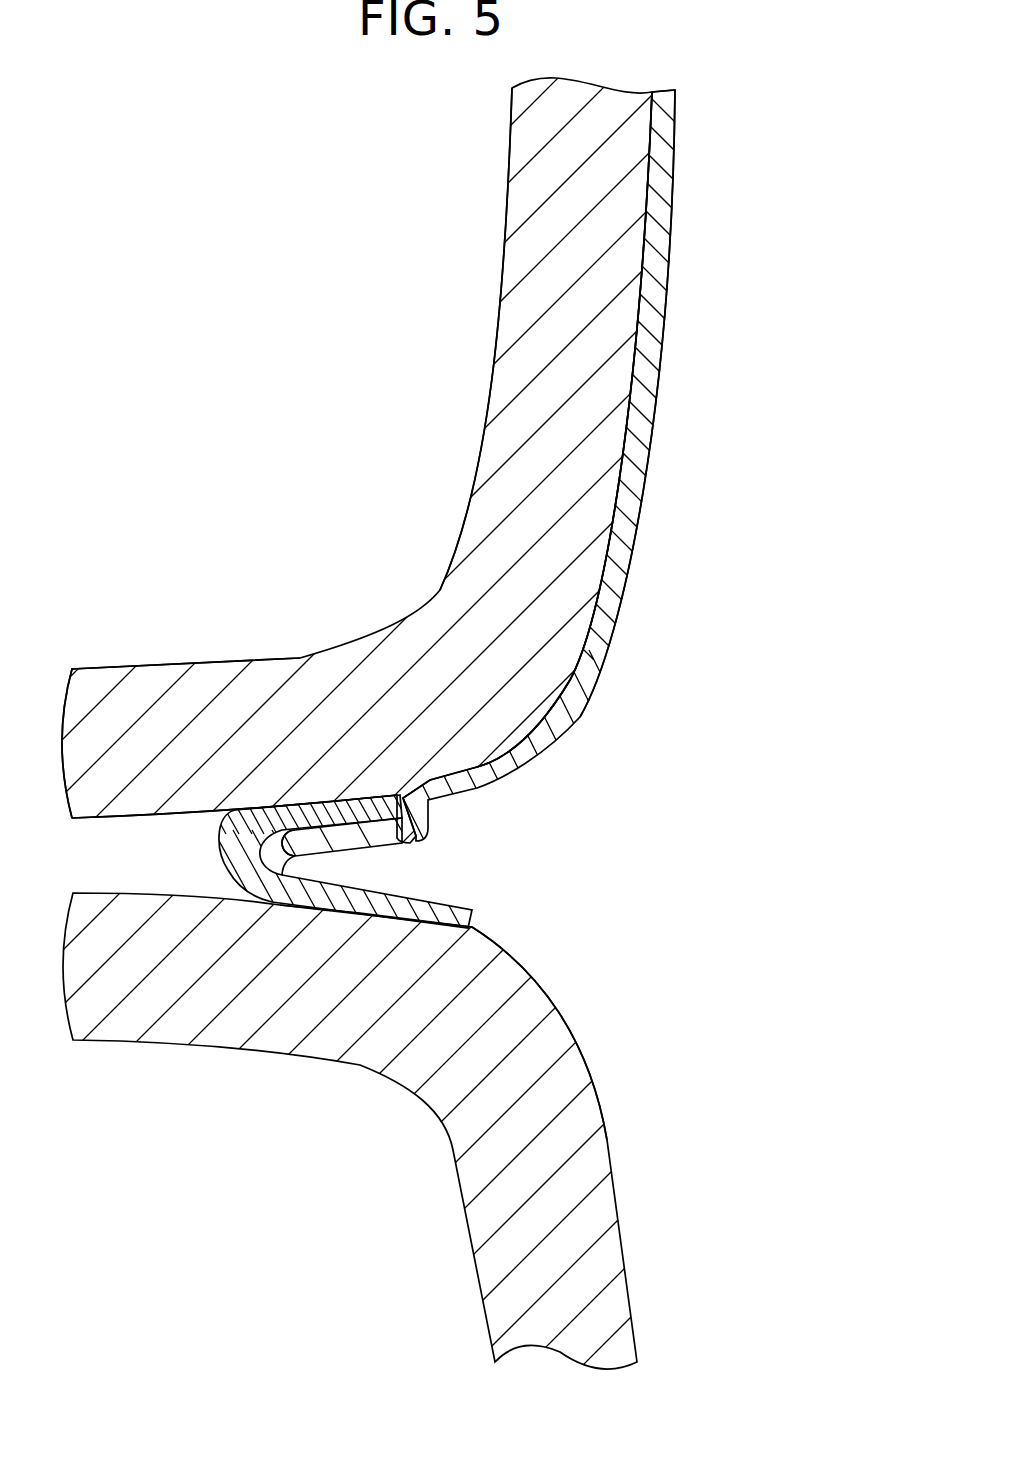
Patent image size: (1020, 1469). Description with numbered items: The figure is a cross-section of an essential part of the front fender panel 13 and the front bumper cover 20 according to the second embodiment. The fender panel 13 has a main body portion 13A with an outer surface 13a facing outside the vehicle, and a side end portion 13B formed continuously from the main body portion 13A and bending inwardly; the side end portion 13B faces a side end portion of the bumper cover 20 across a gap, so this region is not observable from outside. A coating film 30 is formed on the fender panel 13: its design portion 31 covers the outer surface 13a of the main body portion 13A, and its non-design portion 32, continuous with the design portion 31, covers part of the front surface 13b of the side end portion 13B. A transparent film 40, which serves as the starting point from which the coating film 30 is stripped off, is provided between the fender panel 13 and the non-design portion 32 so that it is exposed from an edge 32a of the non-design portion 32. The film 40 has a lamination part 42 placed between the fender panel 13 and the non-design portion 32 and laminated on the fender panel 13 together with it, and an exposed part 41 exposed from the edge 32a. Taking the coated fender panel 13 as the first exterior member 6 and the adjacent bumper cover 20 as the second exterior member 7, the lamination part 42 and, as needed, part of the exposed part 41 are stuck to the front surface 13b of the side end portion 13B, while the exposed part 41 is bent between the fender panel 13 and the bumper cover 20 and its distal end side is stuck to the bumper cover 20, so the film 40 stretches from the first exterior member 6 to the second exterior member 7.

The first exterior member 6 is at (752, 430).
The second exterior member 7 is at (690, 1108).
The fender panel 13 is at (590, 323).
The main body portion 13A is at (613, 243).
The side end portion 13B is at (187, 680).
The outer surface 13a is at (637, 390).
The front surface 13b is at (127, 815).
The front bumper cover 20 is at (597, 1188).
The coating film 30 is at (637, 457).
The design portion 31 is at (660, 170).
The non-design portion 32 is at (402, 842).
The edge 32a is at (283, 835).
The film 40 is at (324, 903).
The exposed part 41 is at (393, 917).
The lamination part 42 is at (338, 800).